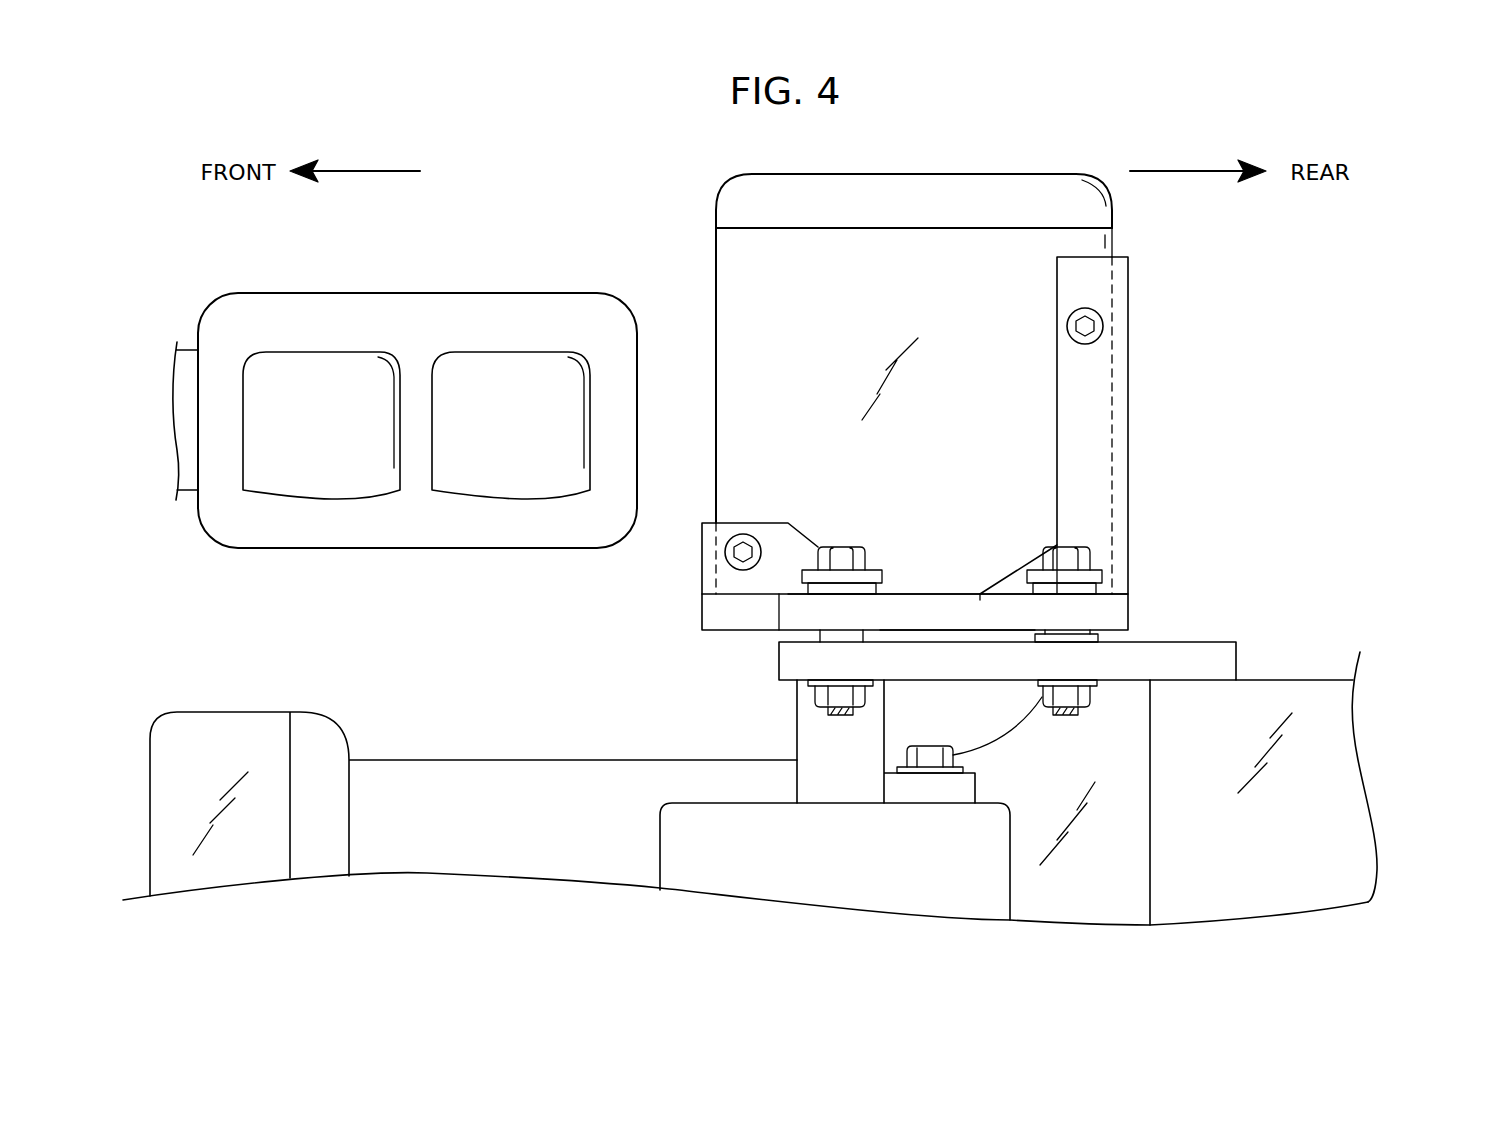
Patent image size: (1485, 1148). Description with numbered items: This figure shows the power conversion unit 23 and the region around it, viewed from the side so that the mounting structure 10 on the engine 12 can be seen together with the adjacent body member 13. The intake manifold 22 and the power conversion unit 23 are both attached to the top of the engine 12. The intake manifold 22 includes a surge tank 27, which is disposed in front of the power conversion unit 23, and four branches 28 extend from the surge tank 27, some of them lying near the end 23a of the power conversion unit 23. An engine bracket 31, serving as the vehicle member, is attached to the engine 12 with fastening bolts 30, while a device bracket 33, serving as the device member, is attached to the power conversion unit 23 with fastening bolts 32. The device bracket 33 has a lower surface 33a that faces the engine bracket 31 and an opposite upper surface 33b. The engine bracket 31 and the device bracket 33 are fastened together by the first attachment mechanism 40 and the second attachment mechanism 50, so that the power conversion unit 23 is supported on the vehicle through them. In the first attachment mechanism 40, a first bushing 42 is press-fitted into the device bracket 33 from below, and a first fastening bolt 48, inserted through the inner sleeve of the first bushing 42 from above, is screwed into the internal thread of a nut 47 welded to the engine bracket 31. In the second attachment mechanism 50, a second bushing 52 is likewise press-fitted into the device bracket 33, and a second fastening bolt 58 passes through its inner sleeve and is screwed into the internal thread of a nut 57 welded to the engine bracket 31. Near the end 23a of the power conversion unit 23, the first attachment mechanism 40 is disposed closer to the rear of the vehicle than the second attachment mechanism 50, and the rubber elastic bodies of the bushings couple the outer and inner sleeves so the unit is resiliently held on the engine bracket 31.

The sensor mounting structure 10 is at (980, 506).
The engine 12 is at (218, 715).
The rear body member 13 is at (1348, 725).
The intake manifold 22 is at (405, 425).
The power conversion unit 23 is at (870, 360).
The end of the power conversion unit 23a is at (888, 265).
The surge tank 27 is at (477, 313).
The branches 28 is at (330, 472).
The fastening bolts 30 is at (930, 752).
The engine bracket 31 is at (1236, 645).
The fastening bolts 32 is at (1070, 328).
The device bracket 33 is at (970, 610).
The lower surface 33a is at (962, 632).
The upper surface 33b is at (948, 593).
The first attachment mechanism 40 is at (1087, 425).
The first bushing 42 is at (1093, 590).
The nut 47 is at (1068, 712).
The first fastening bolt 48 is at (1062, 557).
The second attachment mechanism 50 is at (871, 543).
The second bushing 52 is at (875, 582).
The nut 57 is at (843, 712).
The second fastening bolt 58 is at (837, 550).